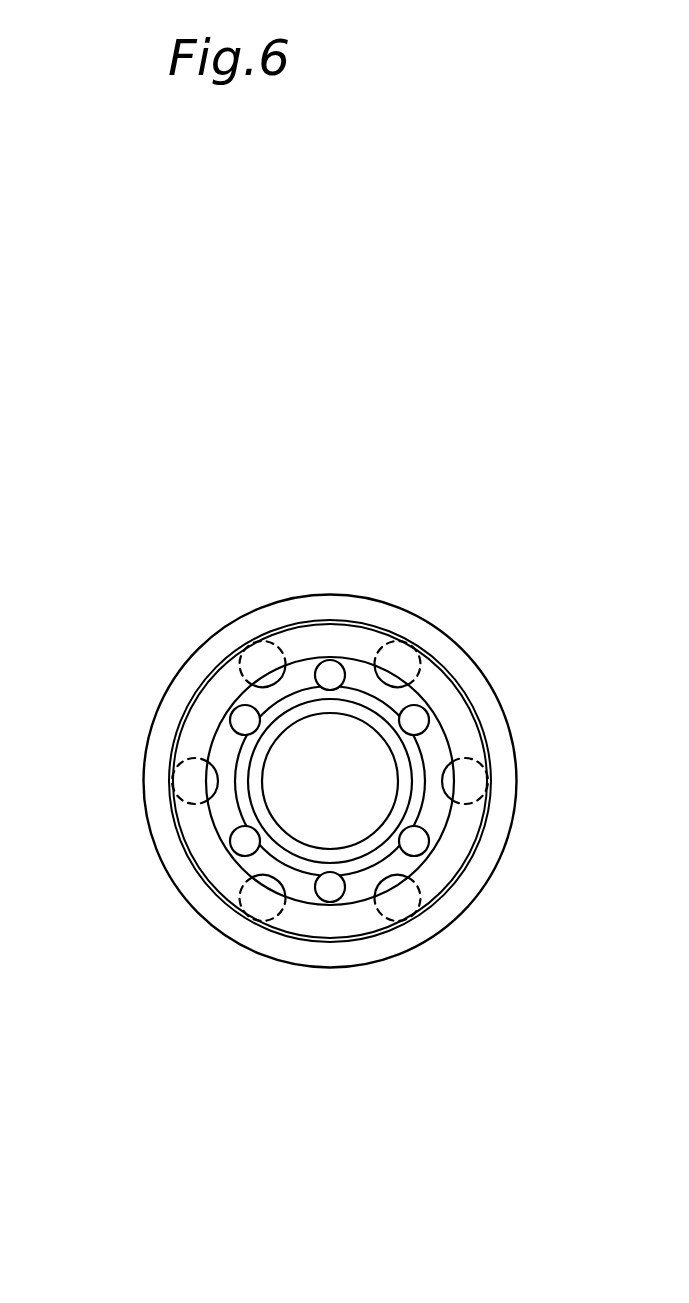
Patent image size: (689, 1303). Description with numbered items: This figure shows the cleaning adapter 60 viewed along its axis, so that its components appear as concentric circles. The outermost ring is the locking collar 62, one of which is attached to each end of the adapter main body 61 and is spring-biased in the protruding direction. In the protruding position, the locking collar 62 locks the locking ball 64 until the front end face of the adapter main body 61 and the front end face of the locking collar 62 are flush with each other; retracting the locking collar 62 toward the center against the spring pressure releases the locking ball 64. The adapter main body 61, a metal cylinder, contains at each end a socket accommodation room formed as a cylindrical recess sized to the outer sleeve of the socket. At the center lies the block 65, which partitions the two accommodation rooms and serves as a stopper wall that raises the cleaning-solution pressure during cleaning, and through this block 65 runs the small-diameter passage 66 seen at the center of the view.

The cleaning adapter 60 is at (332, 826).
The adapter main body 61 is at (450, 860).
The locking collar 62 is at (498, 747).
The locking ball 64 is at (492, 818).
The block 65 is at (328, 800).
The small-diameter passage 66 is at (330, 668).